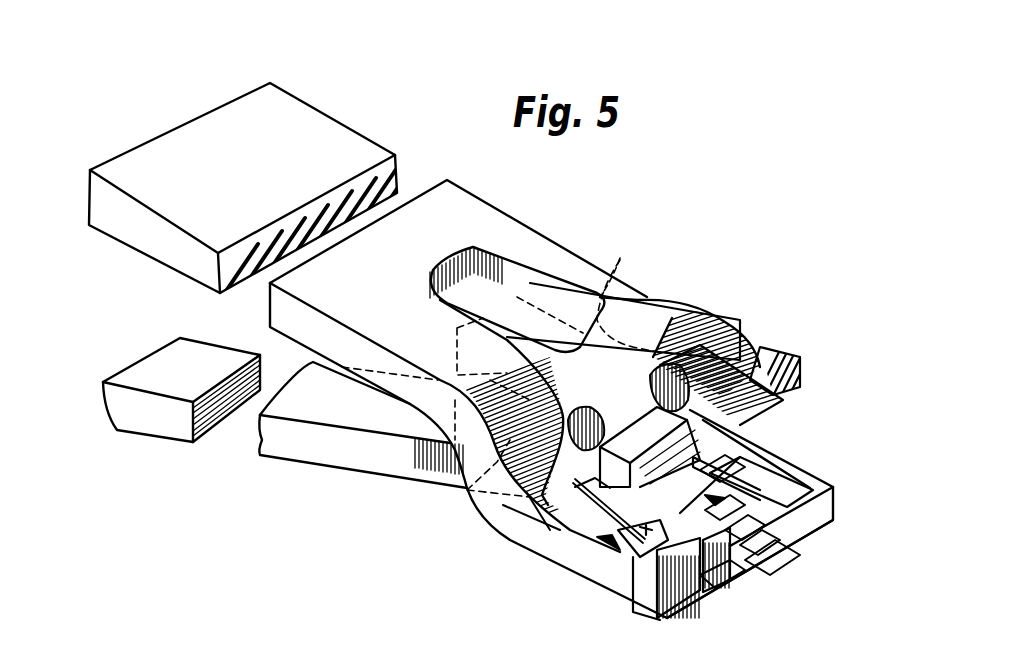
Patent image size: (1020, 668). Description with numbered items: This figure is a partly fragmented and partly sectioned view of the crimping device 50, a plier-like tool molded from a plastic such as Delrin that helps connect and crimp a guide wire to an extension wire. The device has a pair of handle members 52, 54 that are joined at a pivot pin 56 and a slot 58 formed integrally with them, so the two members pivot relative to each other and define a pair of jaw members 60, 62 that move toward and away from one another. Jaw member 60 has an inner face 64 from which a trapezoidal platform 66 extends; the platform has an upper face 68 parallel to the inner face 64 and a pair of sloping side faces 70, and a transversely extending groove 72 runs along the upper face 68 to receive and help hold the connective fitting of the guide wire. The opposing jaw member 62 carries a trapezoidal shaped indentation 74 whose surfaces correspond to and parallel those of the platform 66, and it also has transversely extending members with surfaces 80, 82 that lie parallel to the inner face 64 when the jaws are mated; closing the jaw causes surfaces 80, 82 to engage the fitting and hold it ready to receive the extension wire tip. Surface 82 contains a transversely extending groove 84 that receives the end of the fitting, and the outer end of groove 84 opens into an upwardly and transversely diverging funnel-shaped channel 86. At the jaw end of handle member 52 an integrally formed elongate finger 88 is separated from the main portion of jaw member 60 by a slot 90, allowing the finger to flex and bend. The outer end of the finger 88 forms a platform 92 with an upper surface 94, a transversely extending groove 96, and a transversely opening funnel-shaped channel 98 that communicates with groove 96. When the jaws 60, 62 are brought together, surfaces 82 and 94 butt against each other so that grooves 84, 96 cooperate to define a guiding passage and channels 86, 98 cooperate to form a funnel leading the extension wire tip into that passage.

The crimping device 50 is at (690, 293).
The handle member 52 is at (370, 138).
The handle member 54 is at (323, 413).
The pivot pin 56 is at (683, 329).
The slot 58 is at (467, 492).
The jaw member 60 is at (728, 590).
The jaw member 62 is at (803, 355).
The inner face 64 is at (815, 482).
The platform 66 is at (765, 556).
The upper face 68 is at (765, 540).
The sloping side faces 70 is at (800, 458).
The transversely extending groove 72 is at (770, 520).
The trapezoidal shaped indentation 74 is at (737, 400).
The surface 80 is at (783, 397).
The surface 82 is at (753, 437).
The transversely extending groove 84 is at (603, 520).
The funnel-shaped channel 86 is at (587, 515).
The elongate finger 88 is at (580, 505).
The slot 90 is at (523, 540).
The platform 92 is at (677, 587).
The upper surface 94 is at (683, 603).
The transversely extending groove 96 is at (730, 590).
The funnel-shaped channel 98 is at (637, 567).